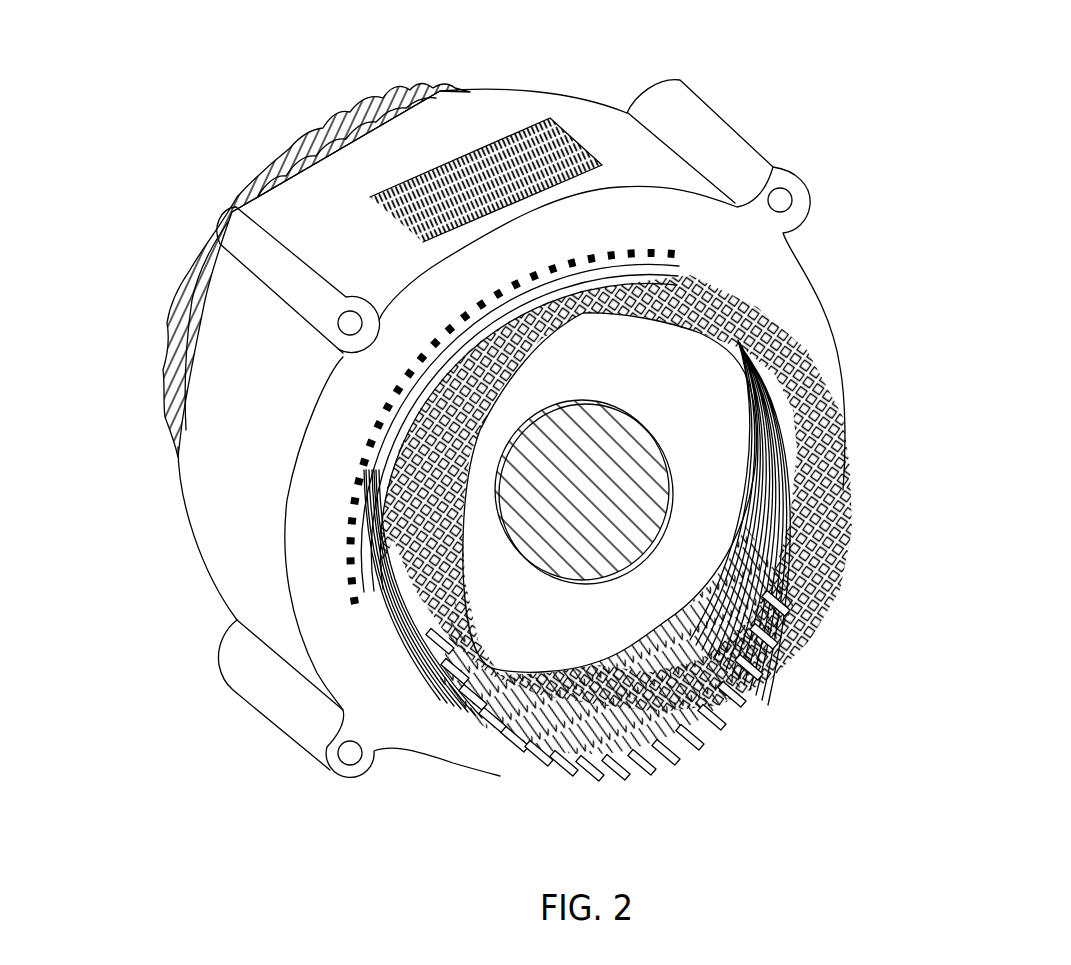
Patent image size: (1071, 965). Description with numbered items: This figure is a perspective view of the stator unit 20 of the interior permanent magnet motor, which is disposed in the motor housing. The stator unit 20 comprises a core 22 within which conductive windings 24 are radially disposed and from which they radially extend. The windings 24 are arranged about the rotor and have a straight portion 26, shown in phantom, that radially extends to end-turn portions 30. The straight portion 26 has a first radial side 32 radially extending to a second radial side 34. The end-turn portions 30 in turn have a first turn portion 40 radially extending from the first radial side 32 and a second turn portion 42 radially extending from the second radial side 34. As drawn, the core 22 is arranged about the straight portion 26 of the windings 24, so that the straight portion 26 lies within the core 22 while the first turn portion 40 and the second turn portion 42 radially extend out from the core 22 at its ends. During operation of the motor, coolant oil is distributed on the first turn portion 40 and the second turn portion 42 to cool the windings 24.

The stator unit 20 is at (226, 76).
The core 22 is at (255, 415).
The conductive windings 24 is at (165, 420).
The straight portion 26 is at (470, 145).
The end-turn portions 30 is at (193, 282).
The first radial side 32 is at (360, 173).
The second radial side 34 is at (540, 183).
The first turn portion 40 is at (213, 247).
The second turn portion 42 is at (752, 638).